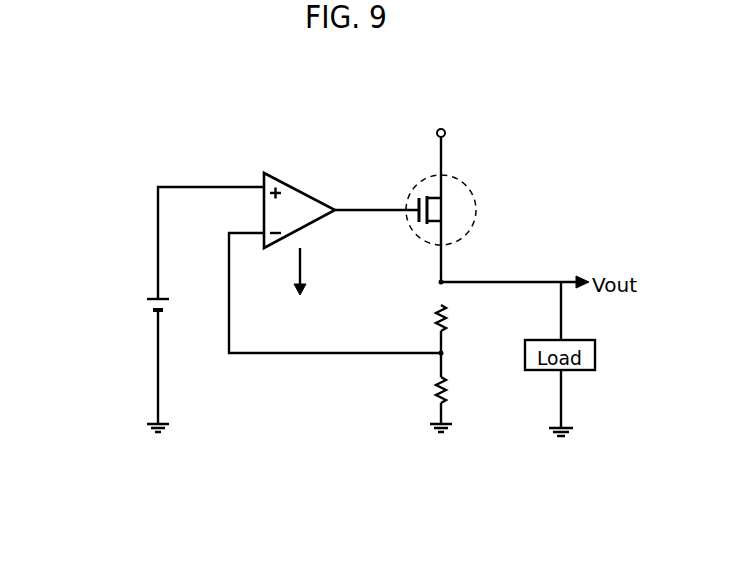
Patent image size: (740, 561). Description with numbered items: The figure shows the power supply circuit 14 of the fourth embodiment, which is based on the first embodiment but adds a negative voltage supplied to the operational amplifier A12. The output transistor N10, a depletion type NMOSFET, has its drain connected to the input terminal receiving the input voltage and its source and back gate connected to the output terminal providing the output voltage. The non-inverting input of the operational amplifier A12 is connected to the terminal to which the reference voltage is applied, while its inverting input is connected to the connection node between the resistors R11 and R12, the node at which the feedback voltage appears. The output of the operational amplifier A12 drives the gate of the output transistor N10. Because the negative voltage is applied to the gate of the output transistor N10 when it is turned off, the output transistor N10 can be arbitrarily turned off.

The power supply circuit 14 is at (86, 100).
The operational amplifier A12 is at (302, 189).
The output transistor N10 is at (450, 211).
The resistor R12 is at (455, 319).
The resistor R11 is at (455, 389).